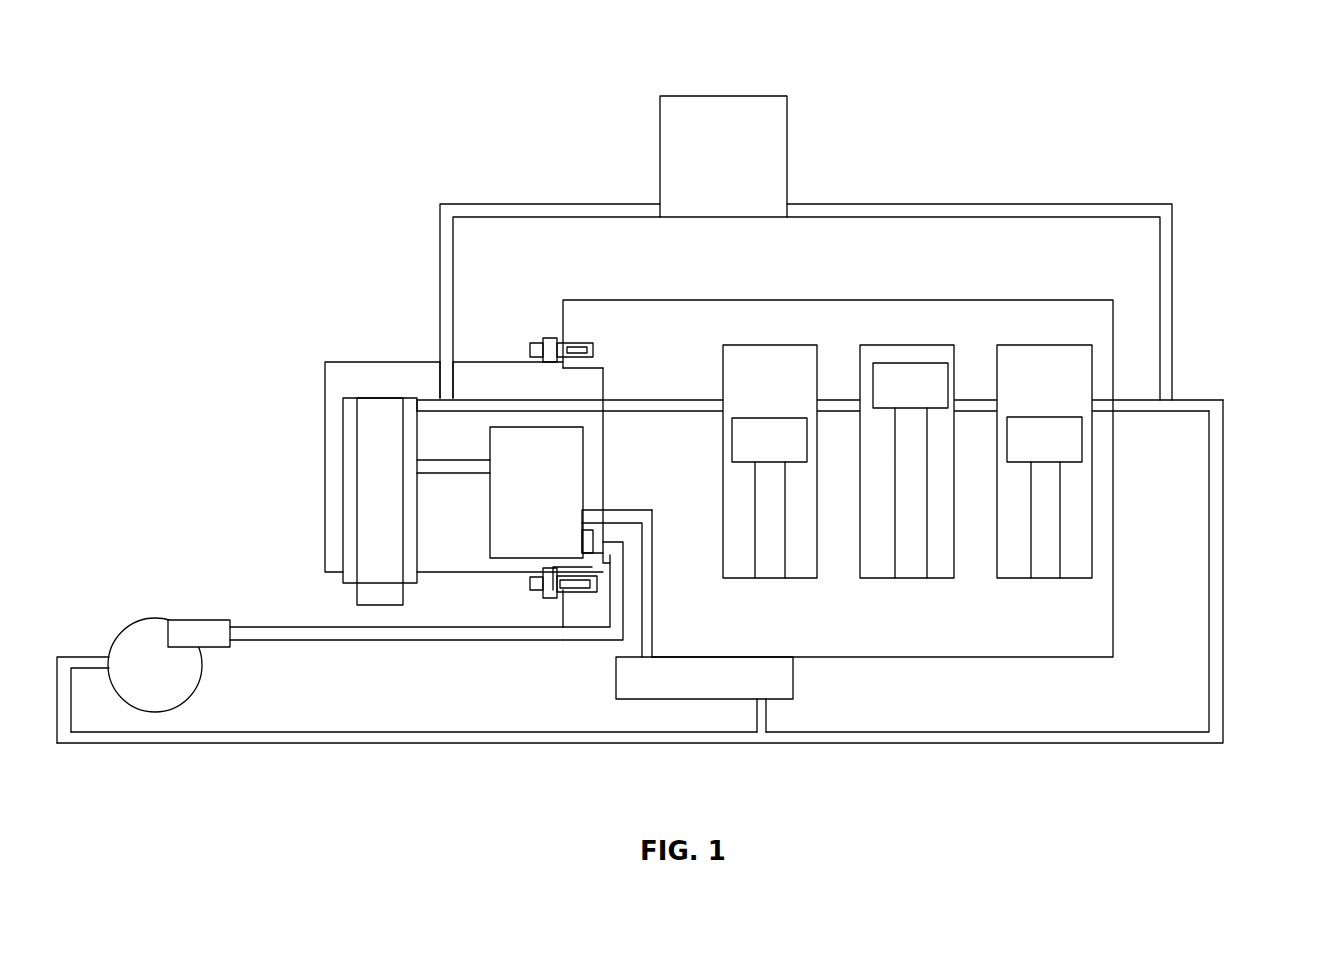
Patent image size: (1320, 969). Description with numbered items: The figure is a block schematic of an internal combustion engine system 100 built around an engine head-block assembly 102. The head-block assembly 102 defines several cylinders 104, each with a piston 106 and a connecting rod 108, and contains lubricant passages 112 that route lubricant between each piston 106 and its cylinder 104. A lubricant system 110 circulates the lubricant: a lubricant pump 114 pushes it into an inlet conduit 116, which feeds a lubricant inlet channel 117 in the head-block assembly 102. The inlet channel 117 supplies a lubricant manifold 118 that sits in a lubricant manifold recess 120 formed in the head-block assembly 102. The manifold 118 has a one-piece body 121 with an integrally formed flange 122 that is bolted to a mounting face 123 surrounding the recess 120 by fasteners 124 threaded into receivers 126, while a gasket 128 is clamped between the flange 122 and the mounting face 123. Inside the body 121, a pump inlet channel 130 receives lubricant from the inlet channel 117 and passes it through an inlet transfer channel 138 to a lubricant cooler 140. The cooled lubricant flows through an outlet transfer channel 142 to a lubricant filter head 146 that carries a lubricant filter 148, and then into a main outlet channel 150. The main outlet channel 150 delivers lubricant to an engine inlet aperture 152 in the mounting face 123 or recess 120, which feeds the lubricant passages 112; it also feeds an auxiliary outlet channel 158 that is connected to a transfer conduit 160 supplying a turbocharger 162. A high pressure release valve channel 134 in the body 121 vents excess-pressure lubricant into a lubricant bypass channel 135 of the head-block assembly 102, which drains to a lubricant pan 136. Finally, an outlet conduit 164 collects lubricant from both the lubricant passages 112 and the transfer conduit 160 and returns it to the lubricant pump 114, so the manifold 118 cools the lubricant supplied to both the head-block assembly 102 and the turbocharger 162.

The internal combustion engine system 100 is at (1216, 145).
The engine head-block assembly 102 is at (1003, 293).
The cylinder 104 is at (750, 343).
The piston 106 is at (770, 417).
The connecting rod 108 is at (785, 560).
The lubricant system 110 is at (1218, 380).
The lubricant passages 112 is at (683, 392).
The lubricant pump 114 is at (156, 620).
The inlet conduit 116 is at (338, 641).
The lubricant inlet channel 117 is at (625, 610).
The lubricant manifold 118 is at (353, 325).
The lubricant manifold recess 120 is at (605, 440).
The body 121 is at (330, 555).
The flange 122 is at (545, 345).
The mounting face 123 is at (553, 600).
The fastener 124 is at (585, 350).
The receiver 126 is at (578, 345).
The gasket 128 is at (555, 340).
The pump inlet channel 130 is at (595, 545).
The high pressure release valve channel 134 is at (600, 511).
The lubricant bypass channel 135 is at (655, 628).
The lubricant pan 136 is at (795, 678).
The inlet transfer channel 138 is at (595, 535).
The lubricant cooler 140 is at (475, 553).
The outlet transfer channel 142 is at (475, 478).
The lubricant filter head 146 is at (318, 463).
The lubricant filter 148 is at (355, 593).
The main outlet channel 150 is at (437, 398).
The engine inlet aperture 152 is at (605, 412).
The auxiliary outlet channel 158 is at (437, 395).
The transfer conduit 160 is at (438, 275).
The turbocharger 162 is at (703, 96).
The outlet conduit 164 is at (77, 657).